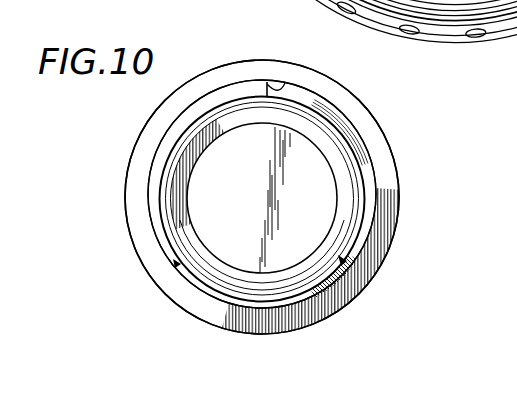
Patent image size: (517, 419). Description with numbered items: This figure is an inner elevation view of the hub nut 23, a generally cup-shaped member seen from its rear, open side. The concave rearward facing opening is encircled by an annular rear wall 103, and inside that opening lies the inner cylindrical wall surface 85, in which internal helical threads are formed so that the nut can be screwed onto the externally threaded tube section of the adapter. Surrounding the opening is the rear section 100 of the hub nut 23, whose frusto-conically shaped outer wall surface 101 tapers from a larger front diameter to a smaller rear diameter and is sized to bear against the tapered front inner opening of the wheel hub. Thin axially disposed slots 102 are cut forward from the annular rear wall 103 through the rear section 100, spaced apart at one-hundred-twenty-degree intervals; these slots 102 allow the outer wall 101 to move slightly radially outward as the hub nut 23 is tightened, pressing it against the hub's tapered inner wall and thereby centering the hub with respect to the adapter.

The hub nut 23 is at (386, 122).
The inner cylindrical wall surface 85 is at (350, 168).
The rear section 100 is at (314, 315).
The frusto-conically shaped outer wall surface 101 is at (193, 285).
The slots 102 is at (285, 82).
The annular rear wall 103 is at (180, 214).